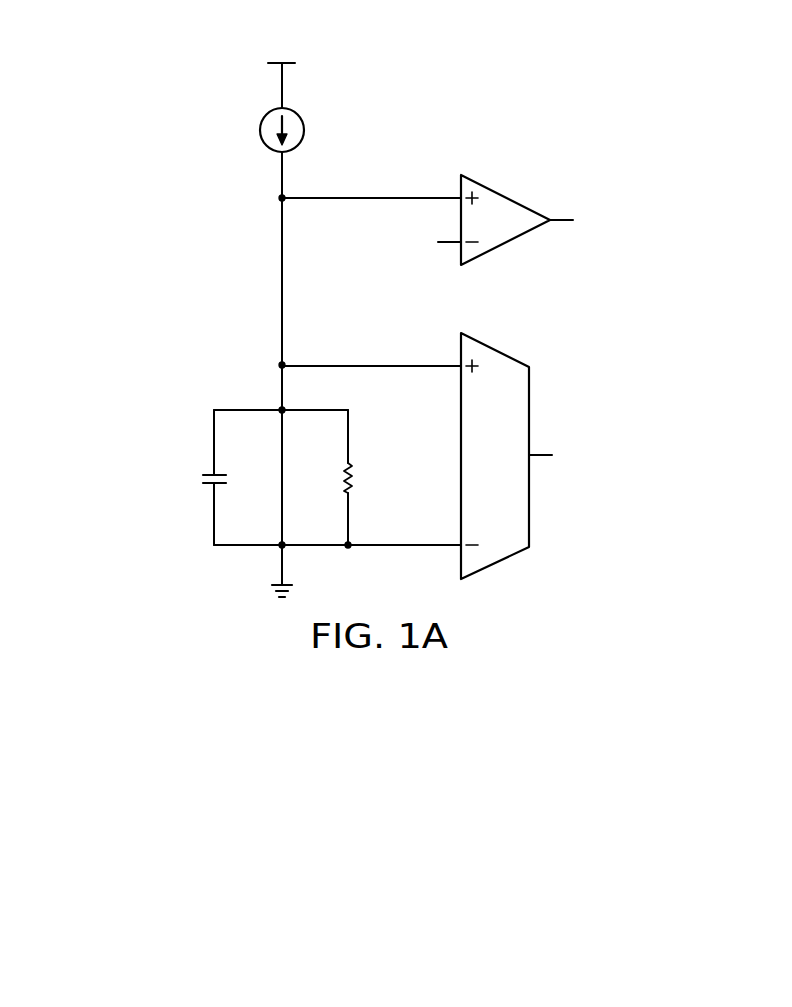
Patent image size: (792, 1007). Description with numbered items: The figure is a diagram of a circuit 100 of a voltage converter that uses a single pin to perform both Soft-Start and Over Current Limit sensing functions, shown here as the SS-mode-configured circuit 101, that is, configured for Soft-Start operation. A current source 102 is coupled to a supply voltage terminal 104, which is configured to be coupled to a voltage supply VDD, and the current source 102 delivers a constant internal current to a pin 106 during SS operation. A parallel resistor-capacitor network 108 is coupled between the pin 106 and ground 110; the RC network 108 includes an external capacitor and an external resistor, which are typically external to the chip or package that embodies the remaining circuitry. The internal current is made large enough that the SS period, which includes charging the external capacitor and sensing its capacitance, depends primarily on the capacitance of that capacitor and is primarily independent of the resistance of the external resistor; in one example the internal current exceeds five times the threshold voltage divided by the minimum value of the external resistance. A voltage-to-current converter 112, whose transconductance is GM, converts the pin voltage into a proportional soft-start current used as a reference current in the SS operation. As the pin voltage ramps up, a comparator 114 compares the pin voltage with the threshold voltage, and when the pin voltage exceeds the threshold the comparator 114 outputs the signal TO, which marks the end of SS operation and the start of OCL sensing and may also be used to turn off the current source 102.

The circuit 100 is at (709, 247).
The SS-mode-configured circuit 101 is at (641, 117).
The current source 102 is at (260, 129).
The supply voltage terminal 104 is at (275, 73).
The pin 106 is at (278, 404).
The parallel resistor-capacitor (RC) network 108 is at (170, 527).
The ground 110 is at (272, 589).
The voltage-to-current (V-I) converter 112 is at (497, 565).
The comparator 114 is at (507, 244).